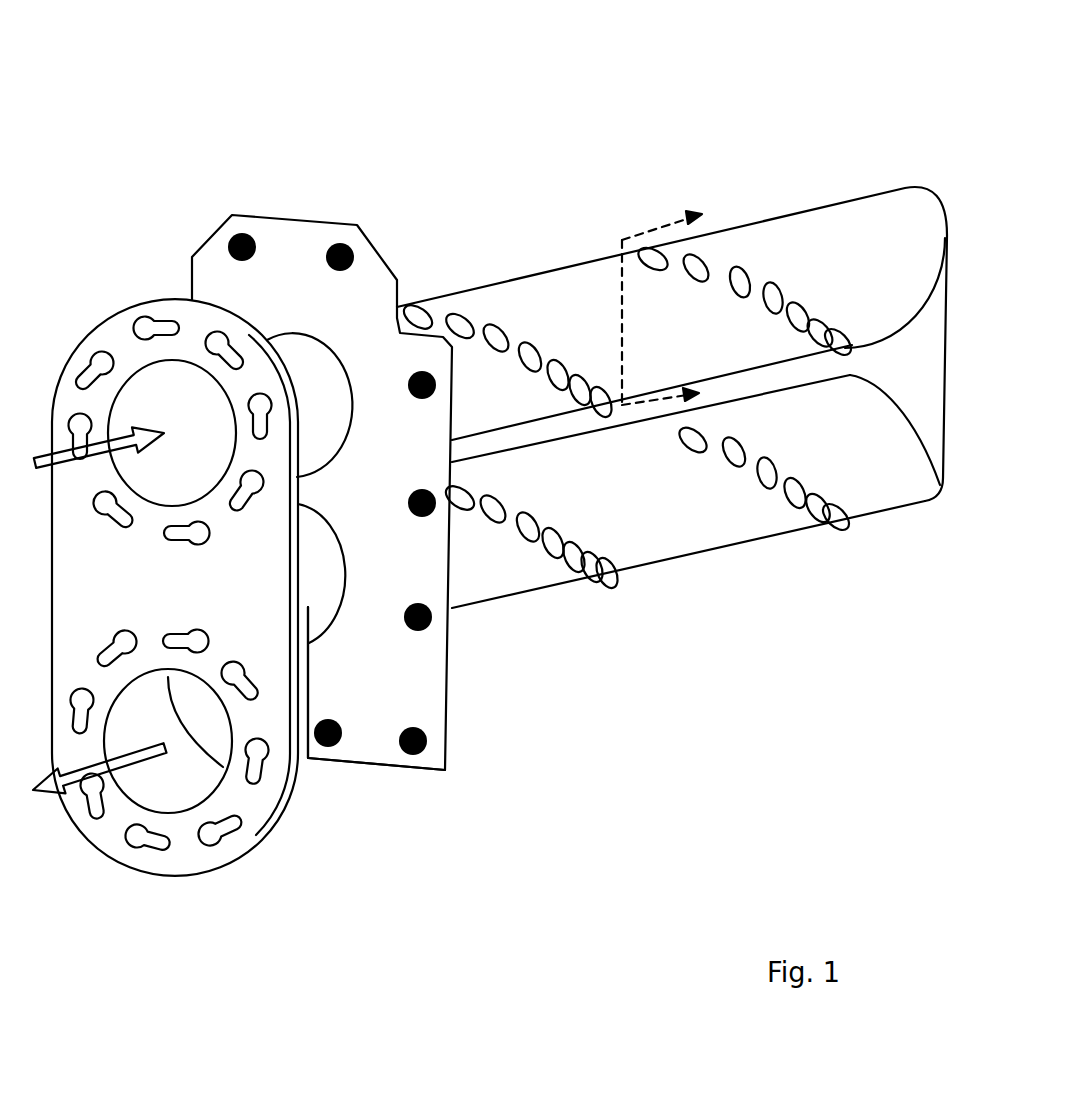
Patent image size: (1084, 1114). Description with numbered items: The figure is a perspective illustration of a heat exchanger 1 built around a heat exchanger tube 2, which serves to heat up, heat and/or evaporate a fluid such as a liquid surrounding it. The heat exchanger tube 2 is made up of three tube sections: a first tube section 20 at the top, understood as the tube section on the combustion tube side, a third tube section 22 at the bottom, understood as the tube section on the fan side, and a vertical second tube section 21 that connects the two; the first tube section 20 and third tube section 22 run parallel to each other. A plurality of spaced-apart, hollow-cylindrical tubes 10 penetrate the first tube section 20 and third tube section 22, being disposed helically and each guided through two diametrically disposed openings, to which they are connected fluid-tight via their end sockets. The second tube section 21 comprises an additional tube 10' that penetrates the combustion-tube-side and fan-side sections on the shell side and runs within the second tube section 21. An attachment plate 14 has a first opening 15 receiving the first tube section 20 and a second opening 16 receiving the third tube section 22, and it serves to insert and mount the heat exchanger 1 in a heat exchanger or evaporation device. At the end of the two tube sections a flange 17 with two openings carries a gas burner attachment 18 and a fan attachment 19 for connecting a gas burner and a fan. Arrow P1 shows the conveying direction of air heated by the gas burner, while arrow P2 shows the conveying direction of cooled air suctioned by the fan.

The heat exchanger 1 is at (288, 178).
The heat exchanger tube 2 is at (548, 300).
The tubes 10 is at (764, 572).
The additional tube 10' is at (839, 189).
The attachment plate 14 is at (370, 748).
The first opening 15 is at (343, 448).
The second opening 16 is at (343, 563).
The flange 17 is at (252, 632).
The gas burner attachment 18 is at (155, 300).
The fan attachment 19 is at (185, 845).
The first tube section 20 is at (768, 240).
The second tube section 21 is at (928, 360).
The third tube section 22 is at (775, 522).
The arrow P1 is at (143, 440).
The arrow P2 is at (110, 762).